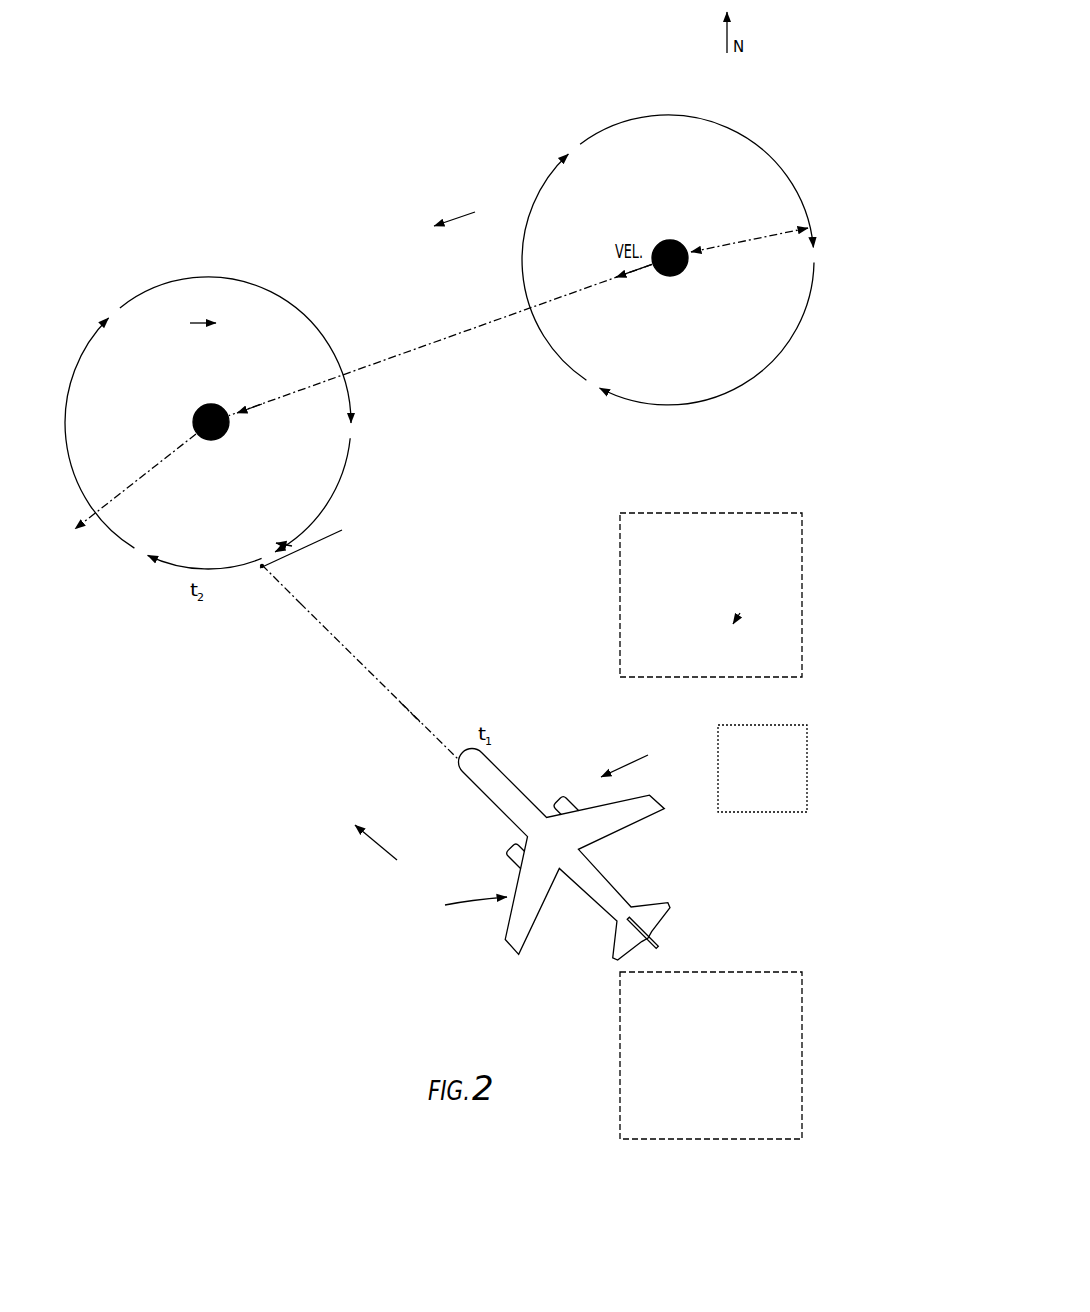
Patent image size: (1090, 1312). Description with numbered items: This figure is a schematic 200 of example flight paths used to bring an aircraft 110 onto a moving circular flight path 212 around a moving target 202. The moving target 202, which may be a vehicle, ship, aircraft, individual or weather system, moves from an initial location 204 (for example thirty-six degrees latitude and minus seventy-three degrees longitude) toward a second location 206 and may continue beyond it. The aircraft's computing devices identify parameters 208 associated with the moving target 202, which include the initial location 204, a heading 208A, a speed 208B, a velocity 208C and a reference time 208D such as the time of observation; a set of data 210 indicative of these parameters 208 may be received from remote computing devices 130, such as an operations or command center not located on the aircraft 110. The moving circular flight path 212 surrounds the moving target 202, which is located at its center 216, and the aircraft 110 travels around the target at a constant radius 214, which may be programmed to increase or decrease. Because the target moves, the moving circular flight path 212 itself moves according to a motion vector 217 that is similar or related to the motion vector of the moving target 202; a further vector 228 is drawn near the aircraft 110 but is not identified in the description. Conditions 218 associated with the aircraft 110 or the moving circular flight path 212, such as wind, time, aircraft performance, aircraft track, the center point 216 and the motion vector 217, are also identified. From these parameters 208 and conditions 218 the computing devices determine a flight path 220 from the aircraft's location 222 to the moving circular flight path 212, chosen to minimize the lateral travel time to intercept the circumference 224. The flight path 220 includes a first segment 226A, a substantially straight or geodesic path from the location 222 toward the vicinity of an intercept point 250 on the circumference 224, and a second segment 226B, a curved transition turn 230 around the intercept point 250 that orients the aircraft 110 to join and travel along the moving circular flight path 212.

The aircraft 110 is at (513, 948).
The remote computing device 130 is at (775, 780).
The target search scenario 200 is at (341, 168).
The moving target 202 is at (667, 238).
The initial location 204 is at (652, 92).
The second location 206 is at (210, 244).
The parameters 208 is at (712, 506).
The heading 208A is at (620, 573).
The speed 208B is at (620, 596).
The velocity 208C is at (620, 620).
The reference time 208D is at (620, 642).
The set of data 210 is at (625, 765).
The moving circular flight path 212 is at (730, 125).
The radius 214 is at (765, 233).
The center 216 is at (687, 275).
The motion vector 217 is at (460, 215).
The conditions 218 is at (696, 966).
The flight path 220 is at (428, 717).
The location of the aircraft 222 is at (363, 589).
The circumference 224 is at (243, 572).
The first segment 226A is at (398, 682).
The second segment 226B is at (297, 568).
The heading vector 228 is at (383, 848).
The transition turn 230 is at (307, 546).
The intercept point 250 is at (262, 568).